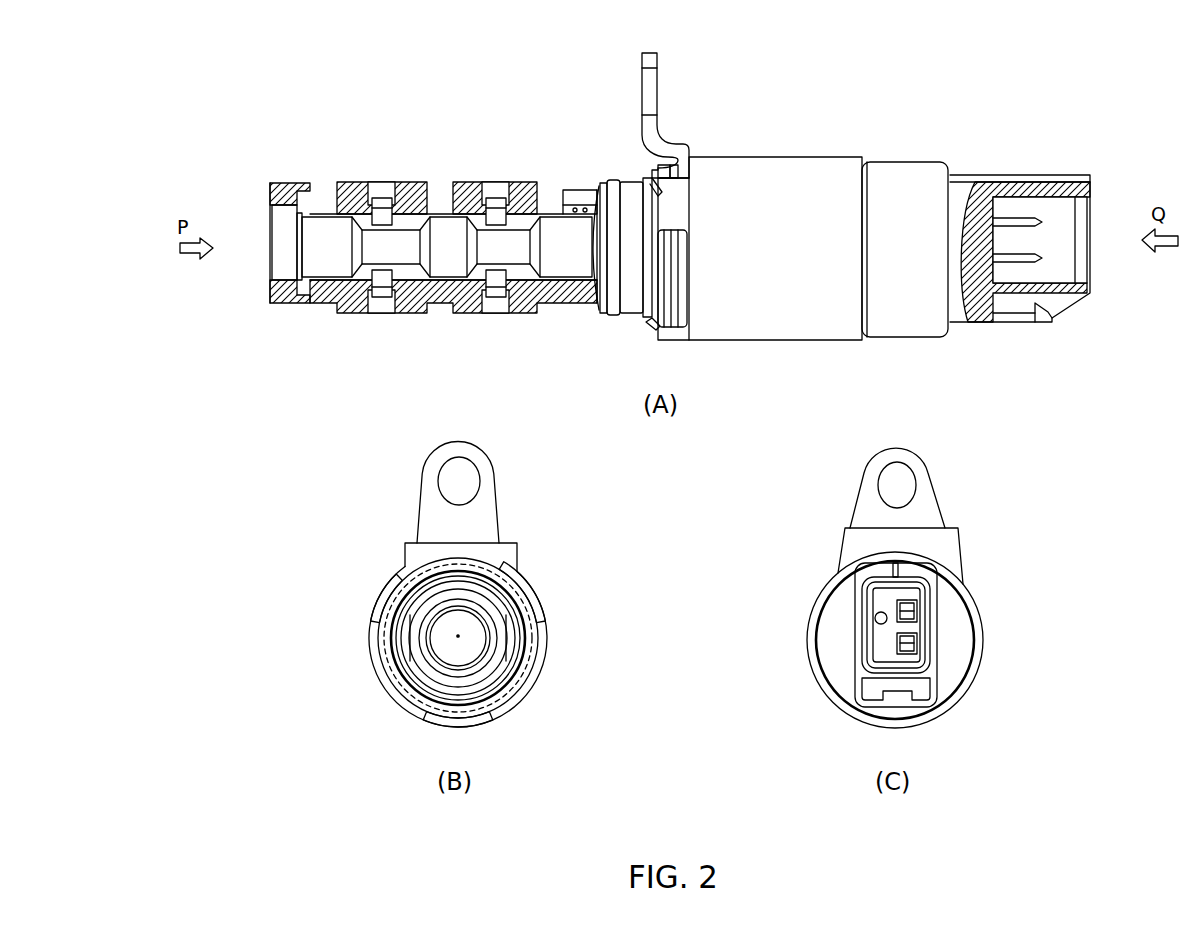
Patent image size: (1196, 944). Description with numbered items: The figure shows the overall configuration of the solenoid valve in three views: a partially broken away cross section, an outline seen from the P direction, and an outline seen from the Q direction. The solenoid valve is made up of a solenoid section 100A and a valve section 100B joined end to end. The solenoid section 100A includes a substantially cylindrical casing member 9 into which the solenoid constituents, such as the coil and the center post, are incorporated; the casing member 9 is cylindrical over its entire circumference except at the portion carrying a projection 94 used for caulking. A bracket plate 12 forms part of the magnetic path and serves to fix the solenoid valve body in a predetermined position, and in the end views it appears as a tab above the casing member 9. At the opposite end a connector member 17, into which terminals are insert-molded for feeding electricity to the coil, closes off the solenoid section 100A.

The valve section 100B is at (430, 150).
The solenoid section 100A is at (895, 108).
The projection 94 is at (655, 182).
The bracket plate 12 is at (490, 527).
The casing member 9 is at (538, 670).
The connector member 17 is at (932, 678).